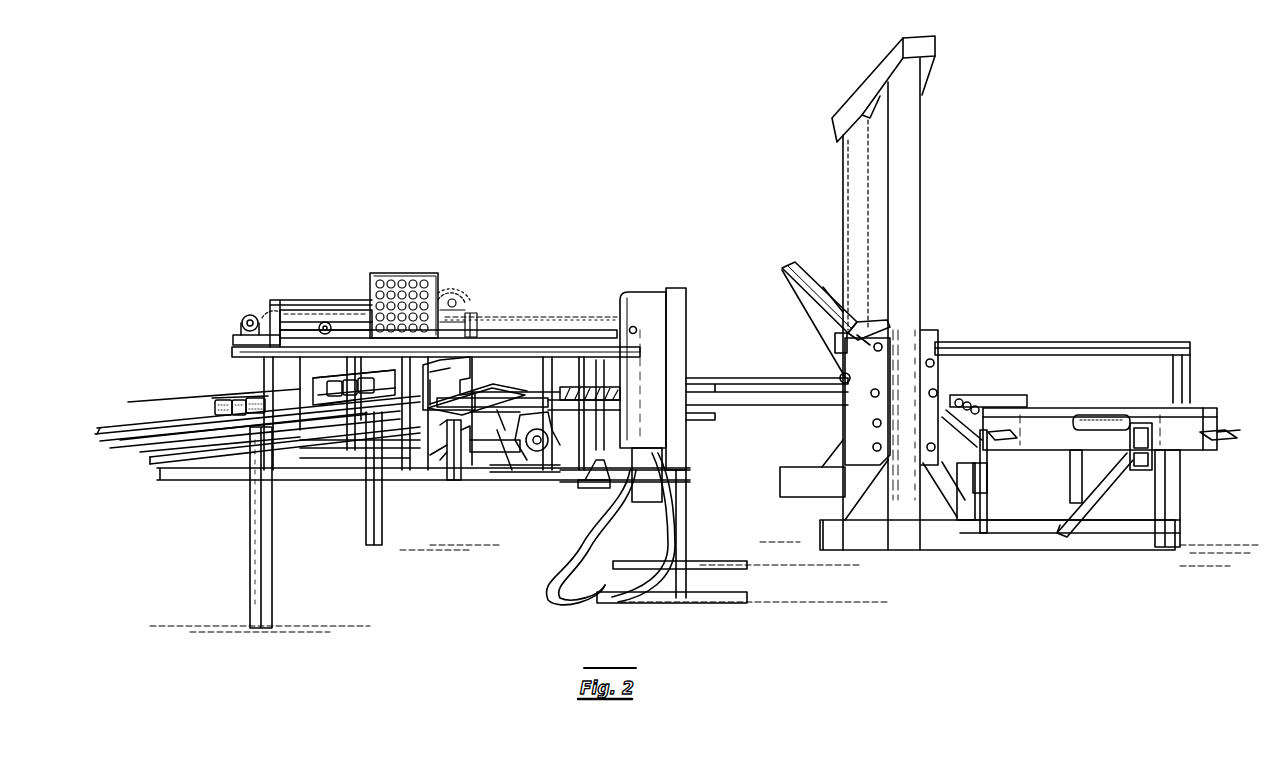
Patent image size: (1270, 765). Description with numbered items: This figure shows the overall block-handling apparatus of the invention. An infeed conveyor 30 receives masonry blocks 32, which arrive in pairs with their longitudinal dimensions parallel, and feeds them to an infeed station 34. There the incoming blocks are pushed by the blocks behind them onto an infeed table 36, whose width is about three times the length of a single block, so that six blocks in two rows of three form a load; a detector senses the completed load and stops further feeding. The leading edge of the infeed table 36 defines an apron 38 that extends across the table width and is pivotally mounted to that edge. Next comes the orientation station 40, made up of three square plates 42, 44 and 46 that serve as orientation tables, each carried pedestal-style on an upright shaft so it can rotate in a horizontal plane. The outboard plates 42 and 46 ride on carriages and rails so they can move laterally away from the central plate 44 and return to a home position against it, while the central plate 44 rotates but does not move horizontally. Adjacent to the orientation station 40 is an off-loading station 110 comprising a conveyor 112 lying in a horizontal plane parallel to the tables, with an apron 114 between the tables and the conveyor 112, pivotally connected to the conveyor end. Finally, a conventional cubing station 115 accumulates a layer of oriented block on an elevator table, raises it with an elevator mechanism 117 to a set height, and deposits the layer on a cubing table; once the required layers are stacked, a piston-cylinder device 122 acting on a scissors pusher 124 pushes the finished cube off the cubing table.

The infeed conveyor 30 is at (140, 421).
The masonry blocks 32 is at (228, 395).
The infeed station 34 is at (222, 333).
The infeed table 36 is at (340, 377).
The apron 38 is at (440, 412).
The orientation station 40 is at (476, 485).
The square plate (outboard orientation table) 42 is at (480, 404).
The square plate (central orientation table) 44 is at (503, 398).
The square plate (outboard orientation table) 46 is at (525, 393).
The off-loading station 110 is at (694, 358).
The conveyor 112 is at (593, 405).
The apron 114 is at (535, 482).
The cubing station 115 is at (1198, 384).
The elevator mechanism 117 is at (948, 102).
The piston-cylinder device 122 is at (1112, 410).
The scissors pusher 124 is at (972, 405).